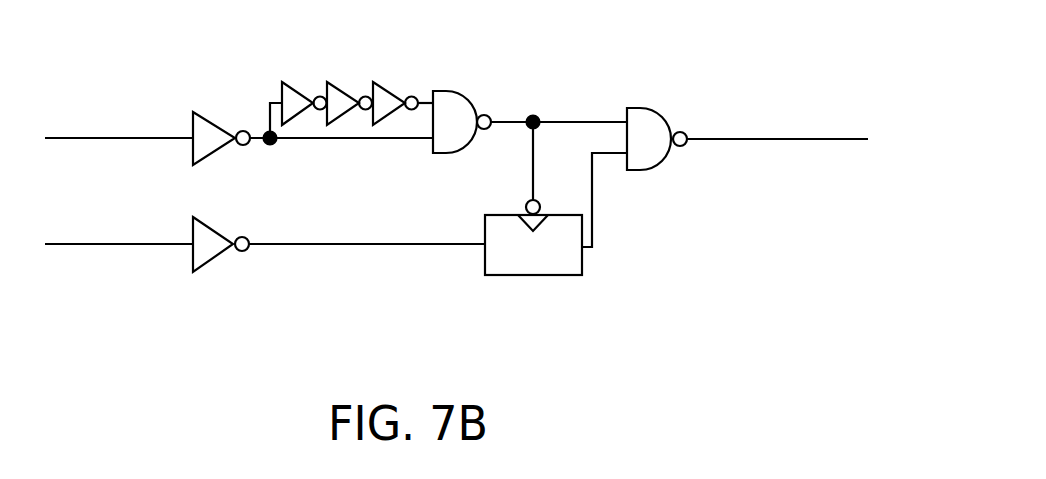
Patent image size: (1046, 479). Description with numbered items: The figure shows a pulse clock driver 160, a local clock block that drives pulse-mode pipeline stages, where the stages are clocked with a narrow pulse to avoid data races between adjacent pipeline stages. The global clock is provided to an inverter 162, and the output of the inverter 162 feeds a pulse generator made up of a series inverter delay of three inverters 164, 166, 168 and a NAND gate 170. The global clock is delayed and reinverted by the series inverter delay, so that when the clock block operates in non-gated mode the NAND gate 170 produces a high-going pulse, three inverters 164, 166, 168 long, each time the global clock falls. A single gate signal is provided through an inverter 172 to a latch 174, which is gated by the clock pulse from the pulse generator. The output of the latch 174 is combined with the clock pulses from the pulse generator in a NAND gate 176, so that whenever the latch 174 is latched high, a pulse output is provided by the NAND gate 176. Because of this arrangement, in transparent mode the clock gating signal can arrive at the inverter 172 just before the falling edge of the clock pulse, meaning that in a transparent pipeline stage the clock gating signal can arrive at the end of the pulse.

The pulse clock driver 160 is at (674, 277).
The inverter 162 is at (213, 122).
The inverter 164 is at (298, 88).
The inverter 166 is at (345, 88).
The inverter 168 is at (388, 88).
The NAND gate 170 is at (458, 92).
The inverter 172 is at (212, 255).
The latch 174 is at (542, 275).
The NAND gate 176 is at (657, 107).